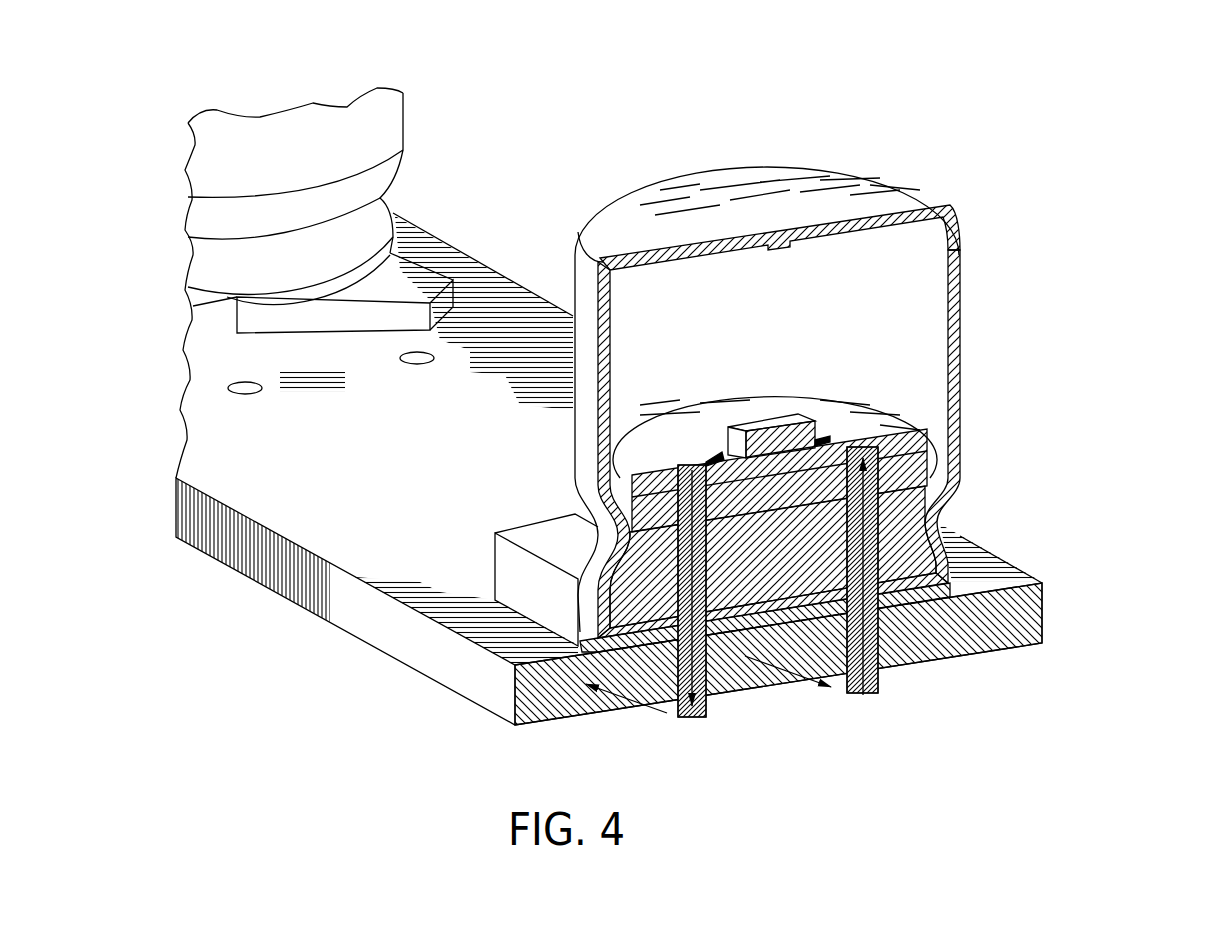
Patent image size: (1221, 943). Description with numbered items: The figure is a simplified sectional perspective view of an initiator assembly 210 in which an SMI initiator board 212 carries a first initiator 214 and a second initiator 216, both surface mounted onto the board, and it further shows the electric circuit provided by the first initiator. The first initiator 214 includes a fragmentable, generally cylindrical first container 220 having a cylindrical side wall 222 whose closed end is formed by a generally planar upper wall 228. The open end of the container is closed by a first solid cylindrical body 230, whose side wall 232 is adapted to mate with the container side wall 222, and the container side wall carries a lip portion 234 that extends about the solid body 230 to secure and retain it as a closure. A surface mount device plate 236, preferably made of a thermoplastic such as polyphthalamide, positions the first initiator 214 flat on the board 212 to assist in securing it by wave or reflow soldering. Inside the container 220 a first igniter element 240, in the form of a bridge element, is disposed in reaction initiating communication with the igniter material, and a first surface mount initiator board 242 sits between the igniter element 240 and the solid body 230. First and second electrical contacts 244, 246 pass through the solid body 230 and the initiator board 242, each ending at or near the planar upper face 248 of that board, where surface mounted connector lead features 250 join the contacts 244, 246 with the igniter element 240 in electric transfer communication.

The initiator assembly 210 is at (691, 396).
The SMI initiator board 212 is at (296, 614).
The first initiator 214 is at (831, 396).
The second initiator 216 is at (277, 205).
The first container 220 is at (831, 435).
The side wall 222 is at (962, 357).
The upper wall 228 is at (884, 193).
The first solid cylindrical body 230 is at (915, 575).
The side wall 232 is at (945, 517).
The lip portion 234 is at (653, 642).
The surface mount device plate 236 is at (517, 570).
The first igniter element 240 is at (773, 427).
The first surface mount initiator board 242 is at (913, 458).
The first electrical contact 244 is at (889, 677).
The second electrical contact 246 is at (694, 666).
The upper face 248 is at (841, 426).
The connector lead features 250 is at (720, 447).